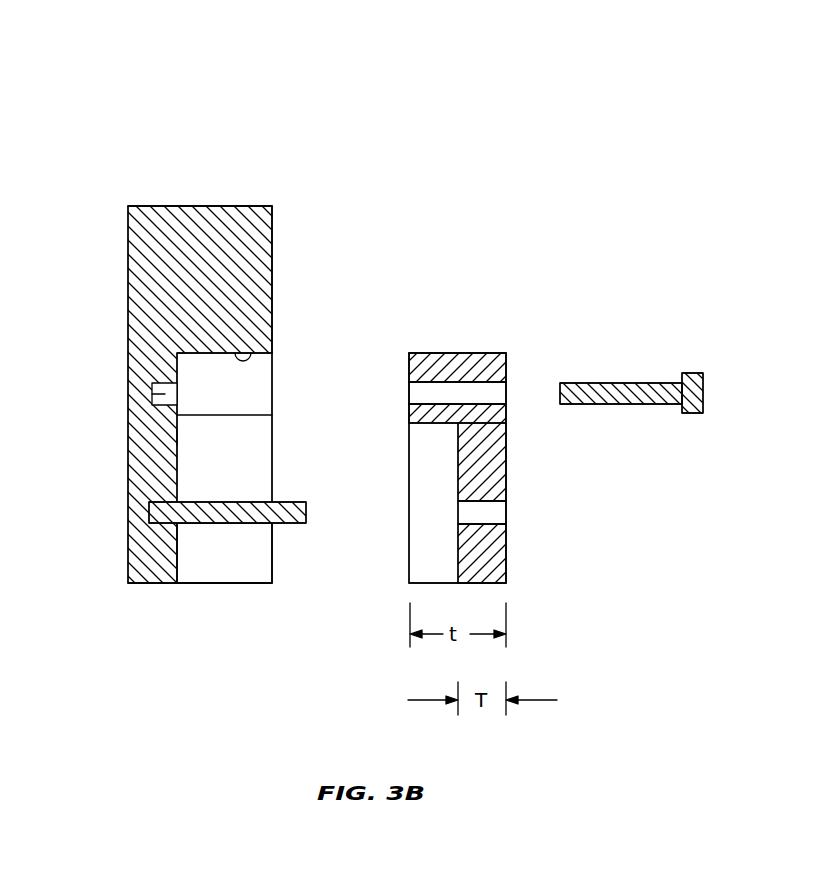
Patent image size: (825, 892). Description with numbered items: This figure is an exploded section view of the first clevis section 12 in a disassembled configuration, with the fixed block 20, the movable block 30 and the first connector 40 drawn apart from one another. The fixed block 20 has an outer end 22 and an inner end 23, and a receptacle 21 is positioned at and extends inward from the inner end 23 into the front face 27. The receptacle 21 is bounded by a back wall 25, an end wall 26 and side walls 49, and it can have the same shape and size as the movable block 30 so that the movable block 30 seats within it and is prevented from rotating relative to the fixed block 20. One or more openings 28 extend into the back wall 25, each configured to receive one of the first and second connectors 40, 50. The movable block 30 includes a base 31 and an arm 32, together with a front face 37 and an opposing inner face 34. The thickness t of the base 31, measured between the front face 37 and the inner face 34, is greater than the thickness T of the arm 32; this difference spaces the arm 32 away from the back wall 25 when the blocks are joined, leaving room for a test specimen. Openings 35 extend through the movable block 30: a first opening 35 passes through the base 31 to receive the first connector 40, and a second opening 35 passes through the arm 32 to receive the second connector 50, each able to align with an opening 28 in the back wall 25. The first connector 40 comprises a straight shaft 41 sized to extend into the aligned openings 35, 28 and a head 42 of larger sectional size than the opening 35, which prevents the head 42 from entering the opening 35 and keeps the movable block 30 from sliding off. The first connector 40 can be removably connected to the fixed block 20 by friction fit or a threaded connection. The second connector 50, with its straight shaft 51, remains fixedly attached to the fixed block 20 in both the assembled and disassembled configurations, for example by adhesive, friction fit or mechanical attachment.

The clevis section 12 is at (146, 165).
The fixed block 20 is at (250, 243).
The receptacle 21 is at (262, 382).
The outer end 22 is at (215, 206).
The inner end 23 is at (150, 583).
The back wall 25 is at (177, 439).
The end wall 26 is at (250, 357).
The front face 27 is at (272, 270).
The openings 28 is at (152, 392).
The movable block 30 is at (487, 470).
The base 31 is at (465, 353).
The arm 32 is at (490, 557).
The inner face 34 is at (409, 368).
The openings 35 is at (485, 393).
The front face 37 is at (506, 437).
The first connector 40 is at (668, 396).
The shaft 41 is at (622, 404).
The head 42 is at (700, 393).
The side walls 49 is at (232, 563).
The second connector 50 is at (295, 523).
The shaft 51 is at (216, 524).